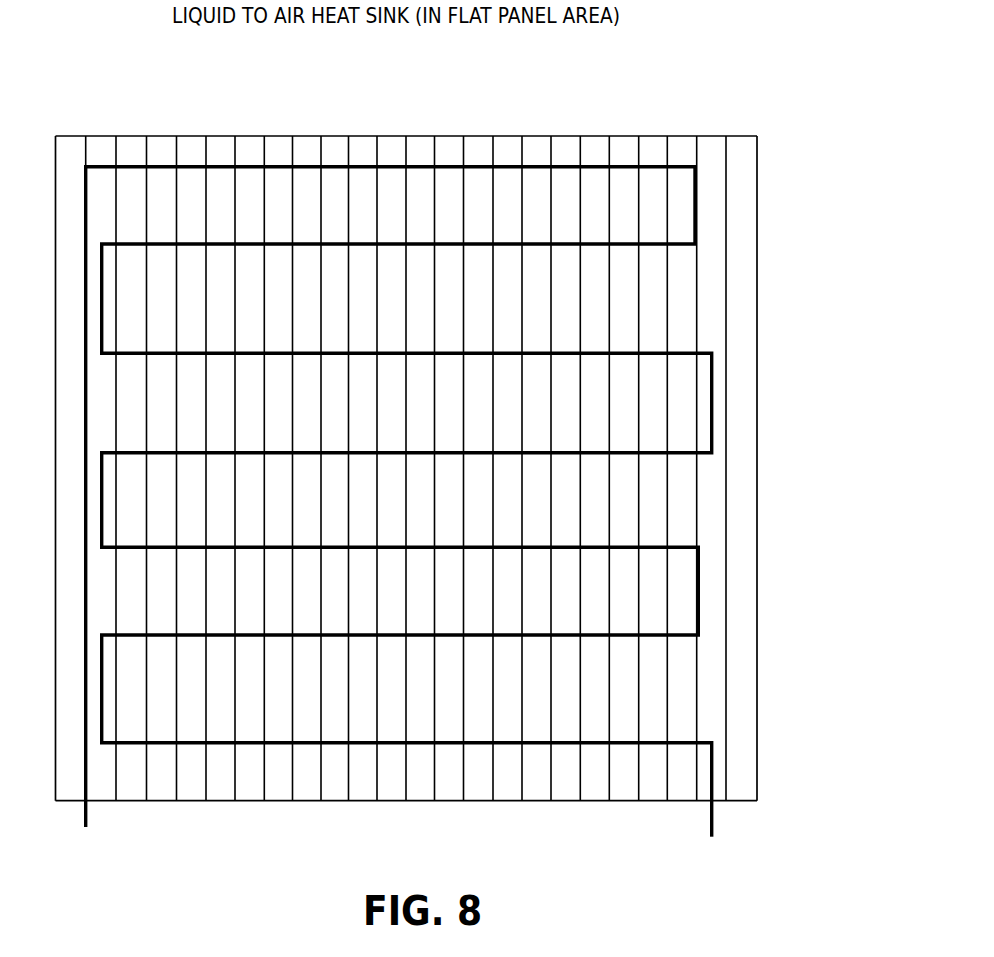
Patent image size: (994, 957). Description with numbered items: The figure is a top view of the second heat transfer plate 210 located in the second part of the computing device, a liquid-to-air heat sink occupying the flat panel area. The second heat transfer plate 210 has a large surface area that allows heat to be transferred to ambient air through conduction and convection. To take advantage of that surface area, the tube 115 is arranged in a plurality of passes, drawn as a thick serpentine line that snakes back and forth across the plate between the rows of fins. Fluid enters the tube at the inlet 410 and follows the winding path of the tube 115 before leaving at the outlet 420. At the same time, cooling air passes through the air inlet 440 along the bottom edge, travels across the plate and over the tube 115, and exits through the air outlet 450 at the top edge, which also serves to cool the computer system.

The second heat transfer plate 210 is at (701, 95).
The air outlet 450 is at (264, 149).
The air inlet 440 is at (578, 785).
The tube 115 is at (713, 396).
The outlet 420 is at (87, 816).
The inlet 410 is at (715, 817).